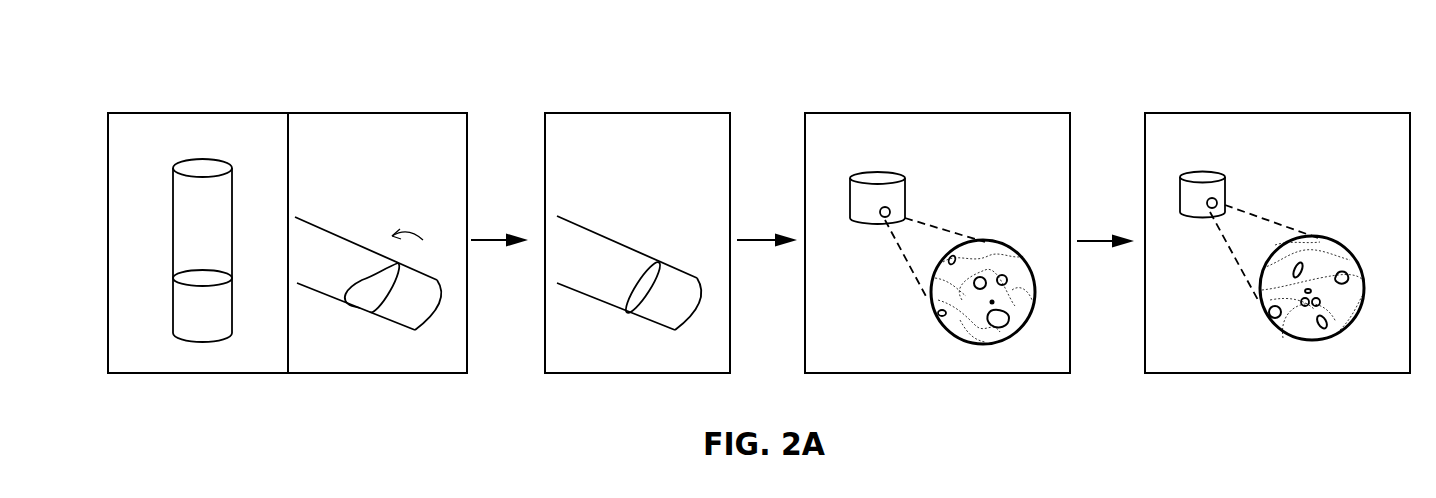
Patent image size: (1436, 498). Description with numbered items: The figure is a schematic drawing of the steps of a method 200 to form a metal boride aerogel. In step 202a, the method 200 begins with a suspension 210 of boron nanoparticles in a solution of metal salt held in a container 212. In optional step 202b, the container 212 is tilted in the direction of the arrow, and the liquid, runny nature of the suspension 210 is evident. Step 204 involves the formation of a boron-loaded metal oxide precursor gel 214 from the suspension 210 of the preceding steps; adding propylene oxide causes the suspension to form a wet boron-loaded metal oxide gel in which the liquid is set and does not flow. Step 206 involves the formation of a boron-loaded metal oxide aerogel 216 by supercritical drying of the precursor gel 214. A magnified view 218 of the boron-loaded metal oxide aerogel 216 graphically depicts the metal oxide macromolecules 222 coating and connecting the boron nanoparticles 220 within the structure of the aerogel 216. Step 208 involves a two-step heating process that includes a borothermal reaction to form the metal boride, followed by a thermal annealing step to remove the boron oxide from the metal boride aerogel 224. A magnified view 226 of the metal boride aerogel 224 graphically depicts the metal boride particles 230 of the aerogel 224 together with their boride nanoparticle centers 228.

The method 200 is at (234, 26).
The step 202a is at (193, 113).
The optional step 202b is at (373, 113).
The step 204 is at (647, 113).
The step 206 is at (910, 113).
The step 208 is at (1250, 113).
The suspension 210 is at (222, 325).
The container 212 is at (173, 201).
The boron-loaded metal oxide precursor gel 214 is at (691, 308).
The boron-loaded metal oxide aerogel 216 is at (895, 193).
The magnified view 218 is at (932, 308).
The boron nanoparticles 220 is at (1012, 272).
The metal oxide macromolecules 222 is at (1012, 318).
The metal boride aerogel 224 is at (1218, 189).
The magnified view 226 is at (1265, 305).
The boride nanoparticle centers 228 is at (1342, 278).
The metal boride particles 230 is at (1327, 318).